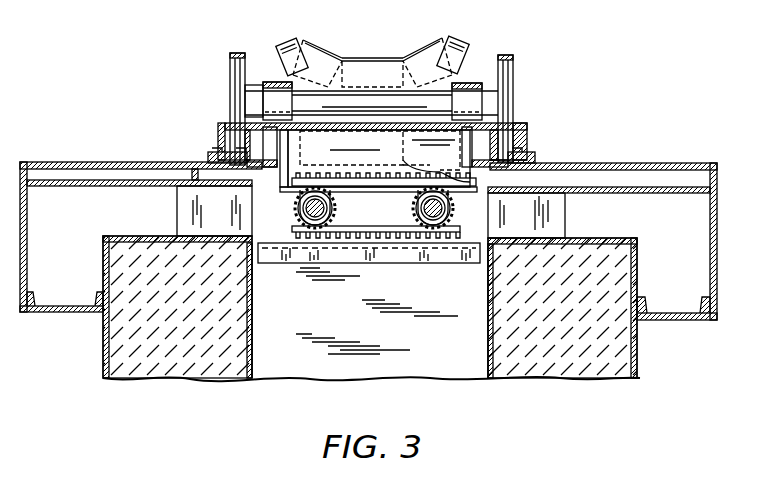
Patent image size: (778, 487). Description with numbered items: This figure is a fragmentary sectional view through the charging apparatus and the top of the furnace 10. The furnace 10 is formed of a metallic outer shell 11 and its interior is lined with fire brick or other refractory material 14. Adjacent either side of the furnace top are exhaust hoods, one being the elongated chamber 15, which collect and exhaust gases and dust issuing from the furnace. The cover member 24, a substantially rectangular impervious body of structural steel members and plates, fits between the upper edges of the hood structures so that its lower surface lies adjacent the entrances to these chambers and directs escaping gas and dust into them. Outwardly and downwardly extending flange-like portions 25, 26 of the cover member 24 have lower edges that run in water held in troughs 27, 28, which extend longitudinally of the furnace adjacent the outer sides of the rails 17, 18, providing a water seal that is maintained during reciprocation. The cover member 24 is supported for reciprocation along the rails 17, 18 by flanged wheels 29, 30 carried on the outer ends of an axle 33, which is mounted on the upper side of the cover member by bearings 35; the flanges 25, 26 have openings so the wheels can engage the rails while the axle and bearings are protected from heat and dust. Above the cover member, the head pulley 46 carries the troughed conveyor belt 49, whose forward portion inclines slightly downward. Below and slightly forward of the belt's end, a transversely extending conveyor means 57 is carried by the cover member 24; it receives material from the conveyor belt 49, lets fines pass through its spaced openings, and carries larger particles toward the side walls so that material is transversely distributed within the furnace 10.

The furnace 10 is at (93, 364).
The metallic outer shell 11 is at (638, 357).
The refractory material 14 is at (247, 312).
The elongated chamber 15 is at (717, 190).
The rail 17 is at (503, 158).
The rail 18 is at (262, 147).
The cover member 24 is at (223, 111).
The flange-like portion 25 is at (528, 138).
The flange-like portion 26 is at (222, 133).
The trough 27 is at (537, 157).
The trough 28 is at (212, 155).
The flanged wheel 29 is at (513, 82).
The flanged wheel 30 is at (235, 72).
The axle 33 is at (252, 92).
The bearing 35 is at (483, 73).
The head pulley 46 is at (280, 190).
The conveyor belt 49 is at (390, 57).
The conveyor means 57 is at (377, 228).